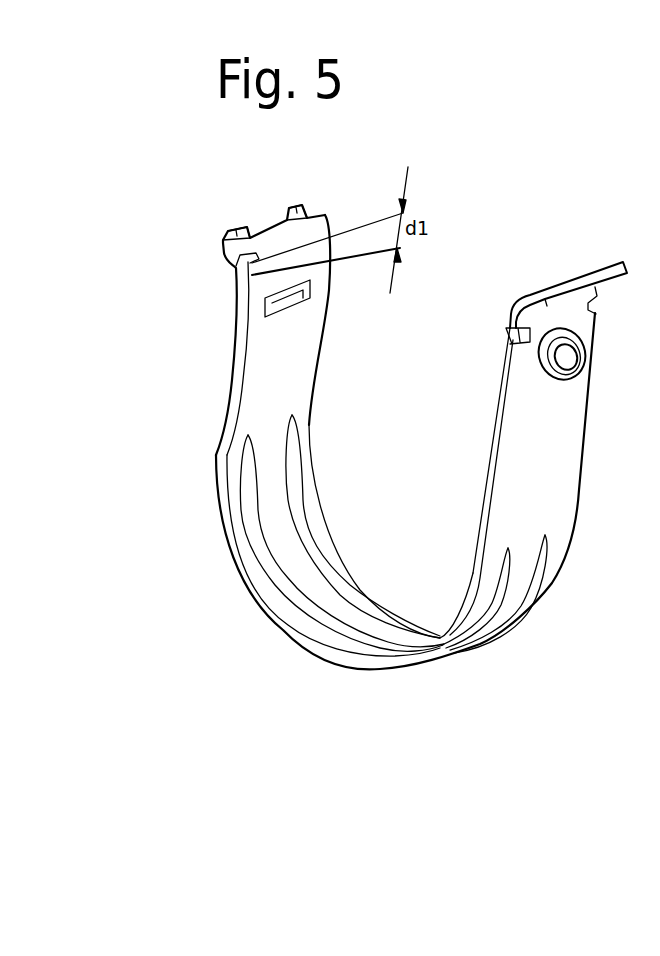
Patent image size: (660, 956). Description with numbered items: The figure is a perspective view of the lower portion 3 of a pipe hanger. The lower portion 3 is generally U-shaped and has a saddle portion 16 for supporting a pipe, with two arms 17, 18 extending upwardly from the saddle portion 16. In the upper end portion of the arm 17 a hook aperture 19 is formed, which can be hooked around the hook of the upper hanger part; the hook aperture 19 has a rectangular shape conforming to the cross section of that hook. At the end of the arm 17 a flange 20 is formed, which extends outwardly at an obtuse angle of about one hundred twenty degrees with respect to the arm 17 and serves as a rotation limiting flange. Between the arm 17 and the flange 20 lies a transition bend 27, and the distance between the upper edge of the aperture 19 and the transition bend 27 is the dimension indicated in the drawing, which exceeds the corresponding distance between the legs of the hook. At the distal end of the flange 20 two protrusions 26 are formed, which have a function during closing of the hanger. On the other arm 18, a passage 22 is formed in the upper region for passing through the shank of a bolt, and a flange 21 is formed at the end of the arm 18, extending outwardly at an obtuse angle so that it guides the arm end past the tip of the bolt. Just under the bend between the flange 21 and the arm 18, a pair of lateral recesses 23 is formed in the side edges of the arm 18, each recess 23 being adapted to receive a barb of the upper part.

The lower portion 3 is at (389, 466).
The saddle portion 16 is at (333, 667).
The arm 17 is at (233, 368).
The arm 18 is at (530, 494).
The hook aperture 19 is at (284, 300).
The flange 20 is at (310, 228).
The flange 21 is at (578, 283).
The passage 22 is at (564, 358).
The lateral recesses 23 is at (516, 330).
The protrusions 26 is at (240, 237).
The transition bend 27 is at (238, 263).